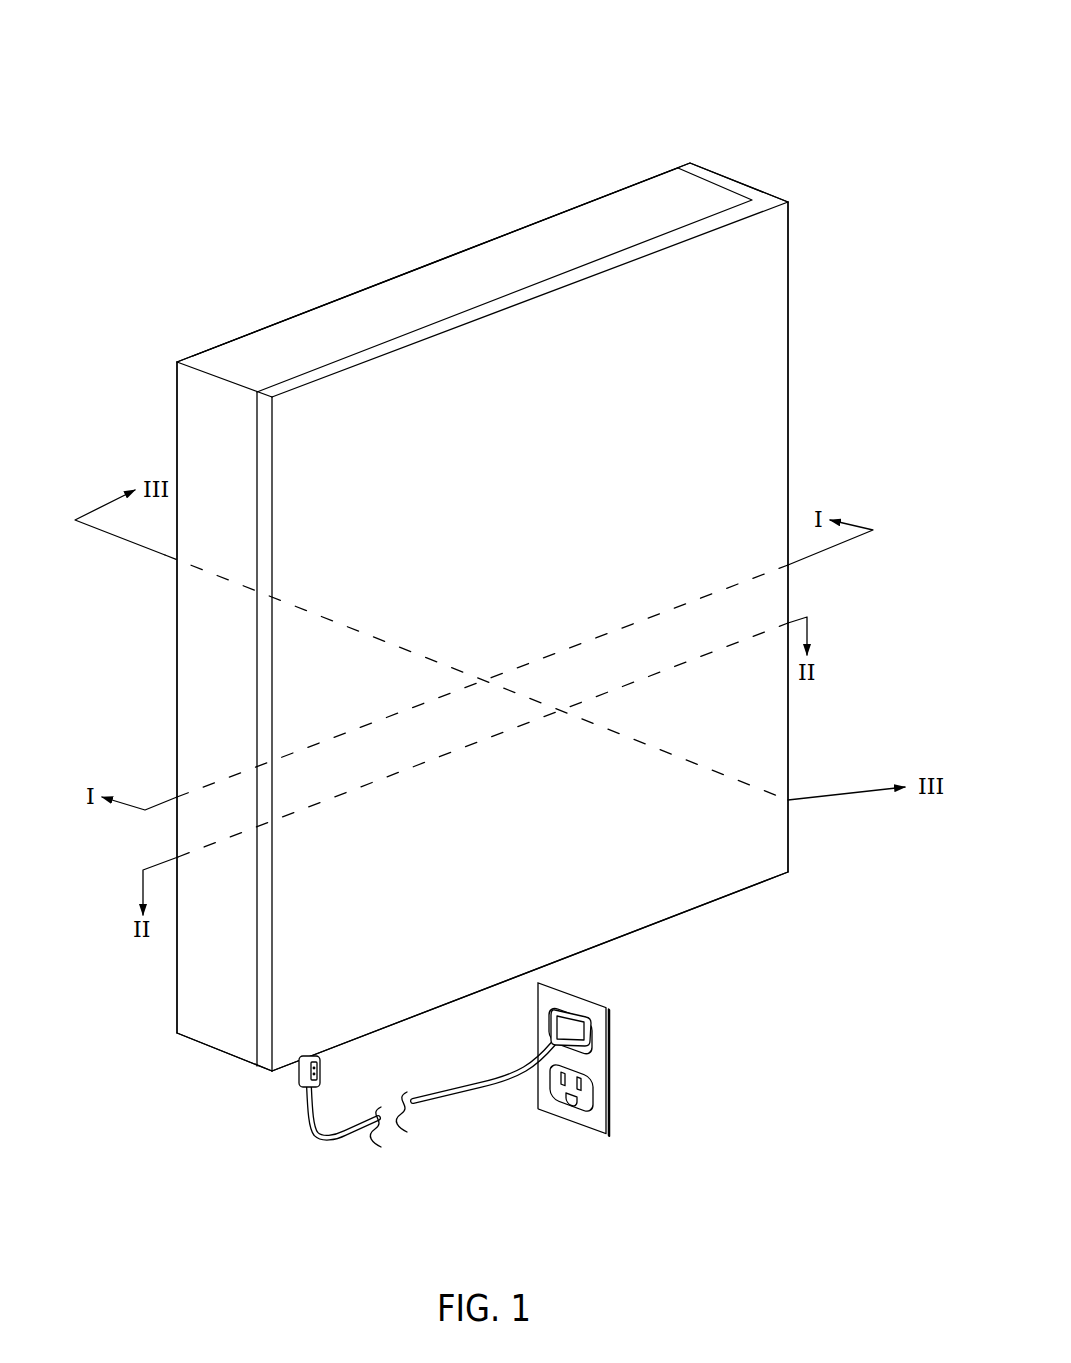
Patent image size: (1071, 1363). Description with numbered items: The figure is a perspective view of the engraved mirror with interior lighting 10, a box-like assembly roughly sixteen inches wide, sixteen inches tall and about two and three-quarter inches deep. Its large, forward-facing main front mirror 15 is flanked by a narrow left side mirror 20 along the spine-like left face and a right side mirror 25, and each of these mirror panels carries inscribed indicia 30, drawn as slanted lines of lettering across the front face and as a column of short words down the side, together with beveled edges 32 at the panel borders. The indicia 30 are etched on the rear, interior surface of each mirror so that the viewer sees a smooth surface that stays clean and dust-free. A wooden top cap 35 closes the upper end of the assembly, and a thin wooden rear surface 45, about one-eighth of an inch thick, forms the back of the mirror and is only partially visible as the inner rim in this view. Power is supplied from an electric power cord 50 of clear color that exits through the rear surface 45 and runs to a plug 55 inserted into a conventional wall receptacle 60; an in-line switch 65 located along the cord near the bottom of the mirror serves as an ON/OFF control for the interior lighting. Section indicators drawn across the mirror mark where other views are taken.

The engraved mirror 10 is at (113, 167).
The main front mirror 15 is at (580, 890).
The left side mirror 20 is at (208, 1017).
The right side mirror 25 is at (732, 185).
The inscribed indicia 30 is at (197, 455).
The beveled edges 32 is at (257, 493).
The top cap 35 is at (318, 342).
The rear surface 45 is at (510, 237).
The electric power cord 50 is at (313, 1145).
The plug 55 is at (567, 1030).
The receptacle 60 is at (548, 1105).
The in-line switch 65 is at (322, 1073).